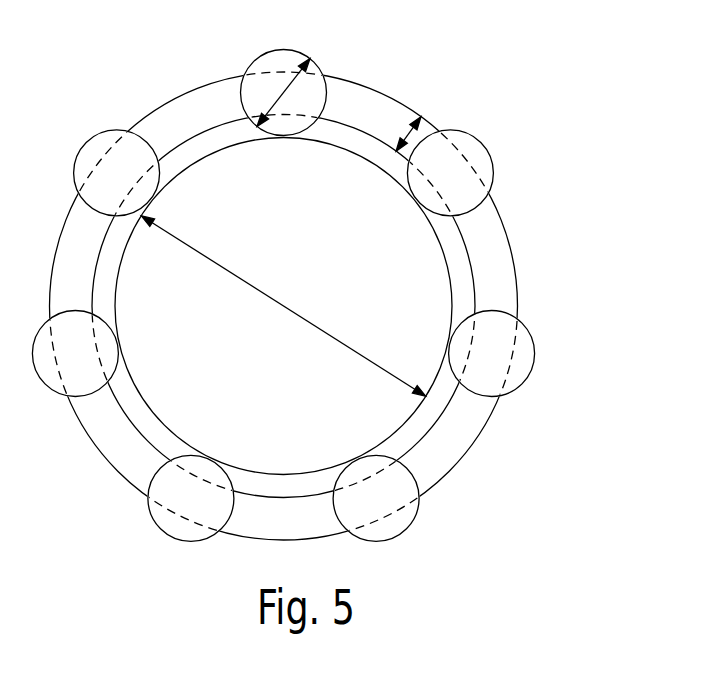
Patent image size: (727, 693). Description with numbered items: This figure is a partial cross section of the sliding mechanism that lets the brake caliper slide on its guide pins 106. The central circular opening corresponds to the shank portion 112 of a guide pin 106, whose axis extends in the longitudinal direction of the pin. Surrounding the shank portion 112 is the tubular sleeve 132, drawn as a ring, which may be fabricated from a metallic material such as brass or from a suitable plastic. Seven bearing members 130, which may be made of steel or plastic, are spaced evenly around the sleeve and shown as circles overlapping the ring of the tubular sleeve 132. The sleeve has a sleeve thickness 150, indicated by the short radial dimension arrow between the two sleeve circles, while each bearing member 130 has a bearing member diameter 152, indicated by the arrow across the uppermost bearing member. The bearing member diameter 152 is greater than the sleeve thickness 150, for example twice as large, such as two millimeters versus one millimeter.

The guide pins 106 is at (478, 114).
The shank portion 112 is at (338, 295).
The bearing members 130 is at (492, 160).
The tubular sleeve 132 is at (487, 248).
The sleeve thickness 150 is at (405, 136).
The bearing member diameter 152 is at (281, 92).